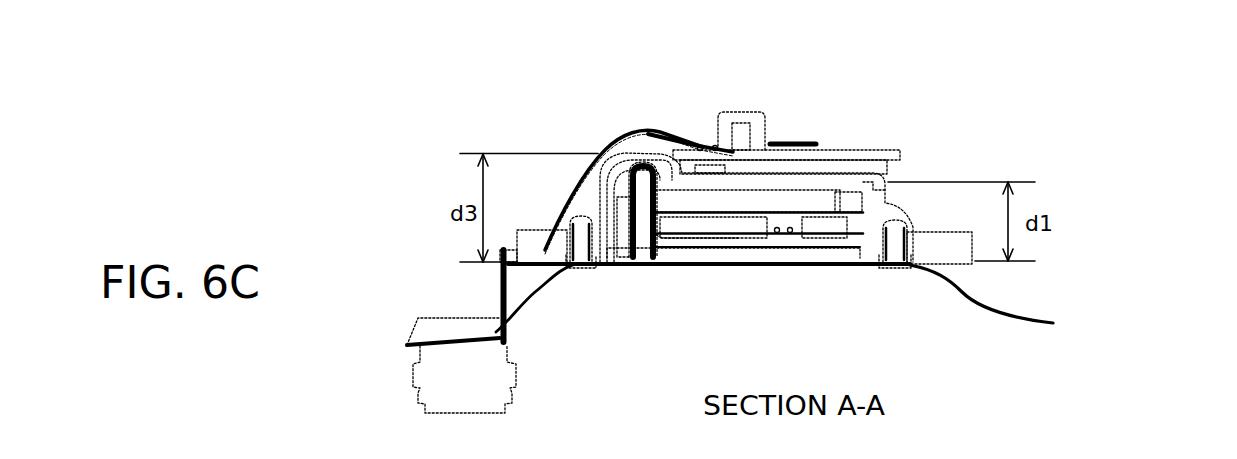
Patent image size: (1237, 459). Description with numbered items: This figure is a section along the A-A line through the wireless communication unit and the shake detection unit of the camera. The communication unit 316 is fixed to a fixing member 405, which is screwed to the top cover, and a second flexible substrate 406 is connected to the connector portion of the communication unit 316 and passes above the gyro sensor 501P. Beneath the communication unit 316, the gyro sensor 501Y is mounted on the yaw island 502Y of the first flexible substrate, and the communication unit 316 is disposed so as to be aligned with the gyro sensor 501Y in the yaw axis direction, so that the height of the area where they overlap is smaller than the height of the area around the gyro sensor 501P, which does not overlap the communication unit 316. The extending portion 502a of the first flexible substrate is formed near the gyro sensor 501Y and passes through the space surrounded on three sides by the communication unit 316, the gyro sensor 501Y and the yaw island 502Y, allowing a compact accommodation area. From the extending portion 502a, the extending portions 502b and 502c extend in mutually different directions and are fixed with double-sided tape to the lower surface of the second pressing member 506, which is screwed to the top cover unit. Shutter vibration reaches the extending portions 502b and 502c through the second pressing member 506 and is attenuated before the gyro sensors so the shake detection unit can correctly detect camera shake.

The second flexible substrate 406 is at (639, 154).
The communication unit 316 is at (804, 116).
The fixing member 405 is at (853, 164).
The extending portion 502a is at (736, 264).
The extending portion 502b is at (462, 331).
The extending portion 502c is at (1028, 294).
The gyro sensor 501P is at (605, 266).
The gyro sensor 501Y is at (753, 277).
The yaw island 502Y is at (758, 288).
The second pressing member 506 is at (829, 297).